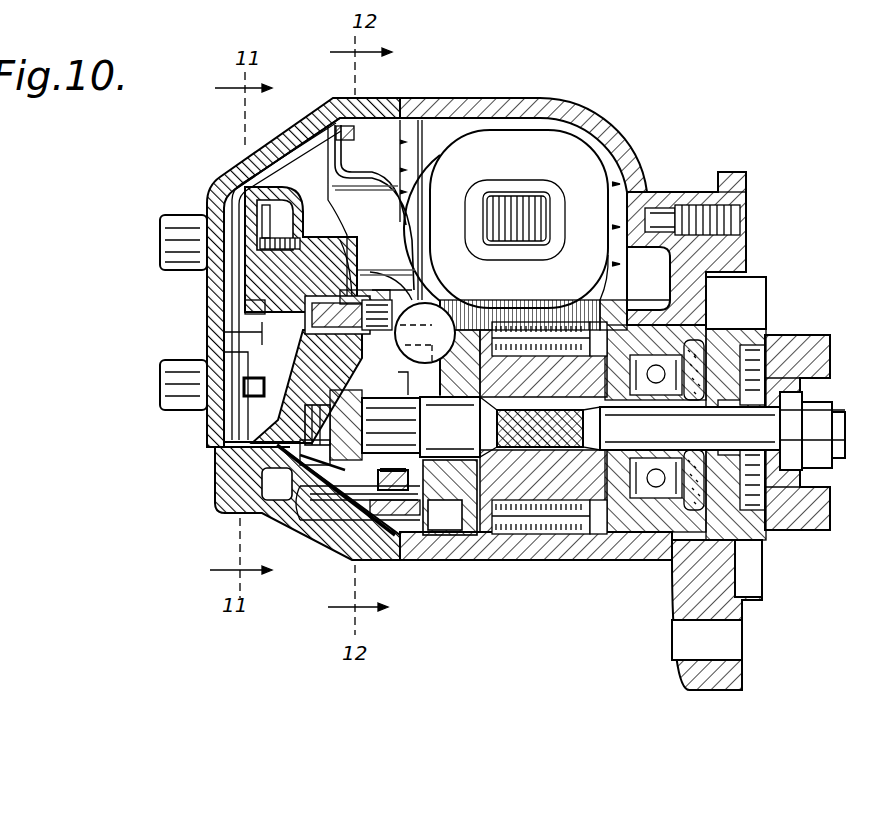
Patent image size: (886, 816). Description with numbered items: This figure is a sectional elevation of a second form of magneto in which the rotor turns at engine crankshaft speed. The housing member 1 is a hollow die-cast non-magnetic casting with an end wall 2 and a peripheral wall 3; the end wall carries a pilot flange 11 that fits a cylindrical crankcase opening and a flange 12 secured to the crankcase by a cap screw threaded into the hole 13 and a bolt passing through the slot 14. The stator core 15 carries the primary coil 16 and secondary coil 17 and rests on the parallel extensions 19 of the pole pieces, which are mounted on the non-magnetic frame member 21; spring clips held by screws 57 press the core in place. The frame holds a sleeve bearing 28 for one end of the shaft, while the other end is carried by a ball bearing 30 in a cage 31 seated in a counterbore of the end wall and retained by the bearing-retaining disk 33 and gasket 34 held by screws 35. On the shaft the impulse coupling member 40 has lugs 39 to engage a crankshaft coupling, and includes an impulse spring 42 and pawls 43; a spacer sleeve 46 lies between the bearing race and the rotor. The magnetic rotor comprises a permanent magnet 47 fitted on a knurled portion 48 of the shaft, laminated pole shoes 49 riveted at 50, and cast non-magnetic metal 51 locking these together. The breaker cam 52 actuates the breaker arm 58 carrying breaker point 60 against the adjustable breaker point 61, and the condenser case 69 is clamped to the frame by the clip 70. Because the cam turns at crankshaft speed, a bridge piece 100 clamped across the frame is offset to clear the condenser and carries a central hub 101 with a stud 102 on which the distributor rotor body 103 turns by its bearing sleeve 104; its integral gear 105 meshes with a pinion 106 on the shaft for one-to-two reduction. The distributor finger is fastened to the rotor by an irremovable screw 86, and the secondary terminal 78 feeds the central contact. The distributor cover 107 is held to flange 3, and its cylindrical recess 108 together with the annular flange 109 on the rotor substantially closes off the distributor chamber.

The housing member 1 is at (616, 124).
The end wall 2 is at (651, 192).
The peripheral wall 3 is at (537, 106).
The pilot flange 11 is at (752, 277).
The flange 12 is at (730, 174).
The hole 13 is at (740, 214).
The slot 14 is at (686, 641).
The laminated iron core 15 is at (522, 205).
The primary coil 16 is at (492, 188).
The secondary coil 17 is at (516, 194).
The parallel extensions 19 is at (606, 270).
The frame member 21 is at (478, 302).
The sleeve bearing 28 is at (445, 447).
The ball bearing 30 is at (655, 490).
The cage or support 31 is at (655, 306).
The bearing-retaining disk 33 is at (703, 320).
The gasket 34 is at (672, 305).
The screws 35 is at (722, 316).
The lugs 39 is at (830, 360).
The impulse coupling member 40 is at (800, 522).
The impulse spring 42 is at (766, 535).
The pawls 43 is at (742, 522).
The spacer sleeve 46 is at (605, 545).
The permanent magnet 47 is at (612, 320).
The knurled portion 48 is at (638, 428).
The pole shoes 49 is at (527, 300).
The rivets 50 is at (555, 300).
The non-magnetic metal 51 is at (503, 300).
The breaker cam 52 is at (378, 416).
The screw 57 is at (472, 297).
The breaker arm 58 is at (378, 480).
The breaker point 60 is at (452, 497).
The breaker point 61 is at (358, 490).
The condenser case 69 is at (425, 333).
The clip 70 is at (416, 341).
The high tension terminal 78 is at (422, 216).
The irremovable screw 86 is at (300, 252).
The bridge piece 100 is at (403, 373).
The central hub 101 is at (386, 277).
The stud 102 is at (366, 272).
The distributor rotor body 103 is at (367, 268).
The central bearing sleeve 104 is at (315, 338).
The integral gear 105 is at (342, 242).
The pinion 106 is at (338, 472).
The distributor cover 107 is at (235, 166).
The cylindrical recess 108 is at (212, 445).
The annular flange 109 is at (308, 444).